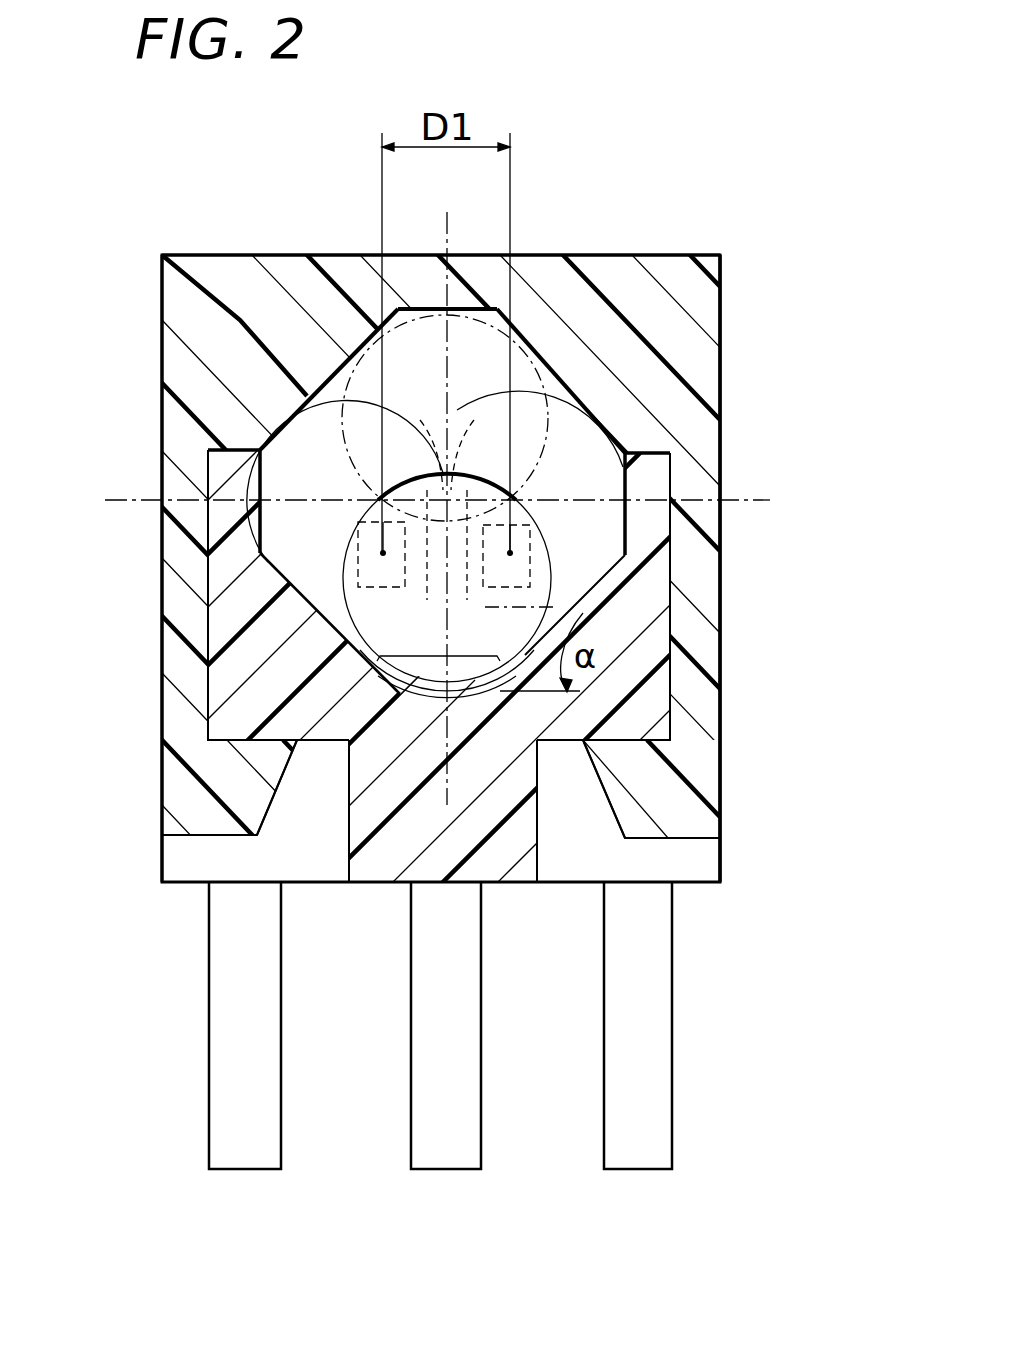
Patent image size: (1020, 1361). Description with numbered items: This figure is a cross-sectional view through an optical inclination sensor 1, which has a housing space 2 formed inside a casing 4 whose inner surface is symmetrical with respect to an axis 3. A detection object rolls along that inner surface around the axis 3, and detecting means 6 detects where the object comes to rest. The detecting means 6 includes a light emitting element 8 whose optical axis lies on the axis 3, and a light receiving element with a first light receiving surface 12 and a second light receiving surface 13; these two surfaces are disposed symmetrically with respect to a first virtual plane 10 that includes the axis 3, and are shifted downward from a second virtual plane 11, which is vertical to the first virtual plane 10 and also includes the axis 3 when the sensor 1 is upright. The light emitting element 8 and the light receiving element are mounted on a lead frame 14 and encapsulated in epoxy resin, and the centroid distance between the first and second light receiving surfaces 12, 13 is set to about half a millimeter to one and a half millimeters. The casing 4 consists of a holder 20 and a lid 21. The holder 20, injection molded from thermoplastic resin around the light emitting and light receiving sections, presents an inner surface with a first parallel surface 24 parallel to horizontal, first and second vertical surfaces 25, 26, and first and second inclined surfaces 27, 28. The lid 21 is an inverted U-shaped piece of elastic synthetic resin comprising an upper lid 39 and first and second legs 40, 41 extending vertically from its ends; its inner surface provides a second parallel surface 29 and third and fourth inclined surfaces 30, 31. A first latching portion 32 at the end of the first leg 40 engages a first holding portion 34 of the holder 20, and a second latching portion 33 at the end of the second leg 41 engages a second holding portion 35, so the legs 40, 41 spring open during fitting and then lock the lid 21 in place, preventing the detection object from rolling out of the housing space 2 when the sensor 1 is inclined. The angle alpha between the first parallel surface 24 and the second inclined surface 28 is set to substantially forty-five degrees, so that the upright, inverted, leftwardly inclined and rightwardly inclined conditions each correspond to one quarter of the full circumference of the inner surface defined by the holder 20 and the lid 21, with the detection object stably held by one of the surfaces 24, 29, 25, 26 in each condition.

The optical inclination sensor 1 is at (764, 172).
The housing space 2 is at (523, 413).
The axis 3 is at (447, 500).
The casing 4 is at (848, 455).
The detecting means 6 is at (388, 690).
The light emitting element 8 is at (435, 544).
The first virtual plane 10 is at (447, 237).
The second virtual plane 11 is at (140, 497).
The first light receiving surface 12 is at (385, 591).
The second light receiving surface 13 is at (490, 593).
The lead frame 14 is at (710, 1145).
The holder 20 is at (650, 582).
The lid 21 is at (700, 490).
The first parallel surface 24 is at (418, 692).
The first vertical surface 25 is at (258, 515).
The second vertical surface 26 is at (625, 503).
The first inclined surface 27 is at (330, 636).
The second inclined surface 28 is at (630, 705).
The second parallel surface 29 is at (462, 310).
The third inclined surface 30 is at (280, 257).
The fourth inclined surface 31 is at (563, 380).
The first latching portion 32 is at (248, 793).
The second latching portion 33 is at (647, 790).
The first holding portion 34 is at (236, 742).
The second holding portion 35 is at (697, 742).
The upper lid 39 is at (347, 258).
The first leg 40 is at (173, 655).
The second leg 41 is at (700, 635).